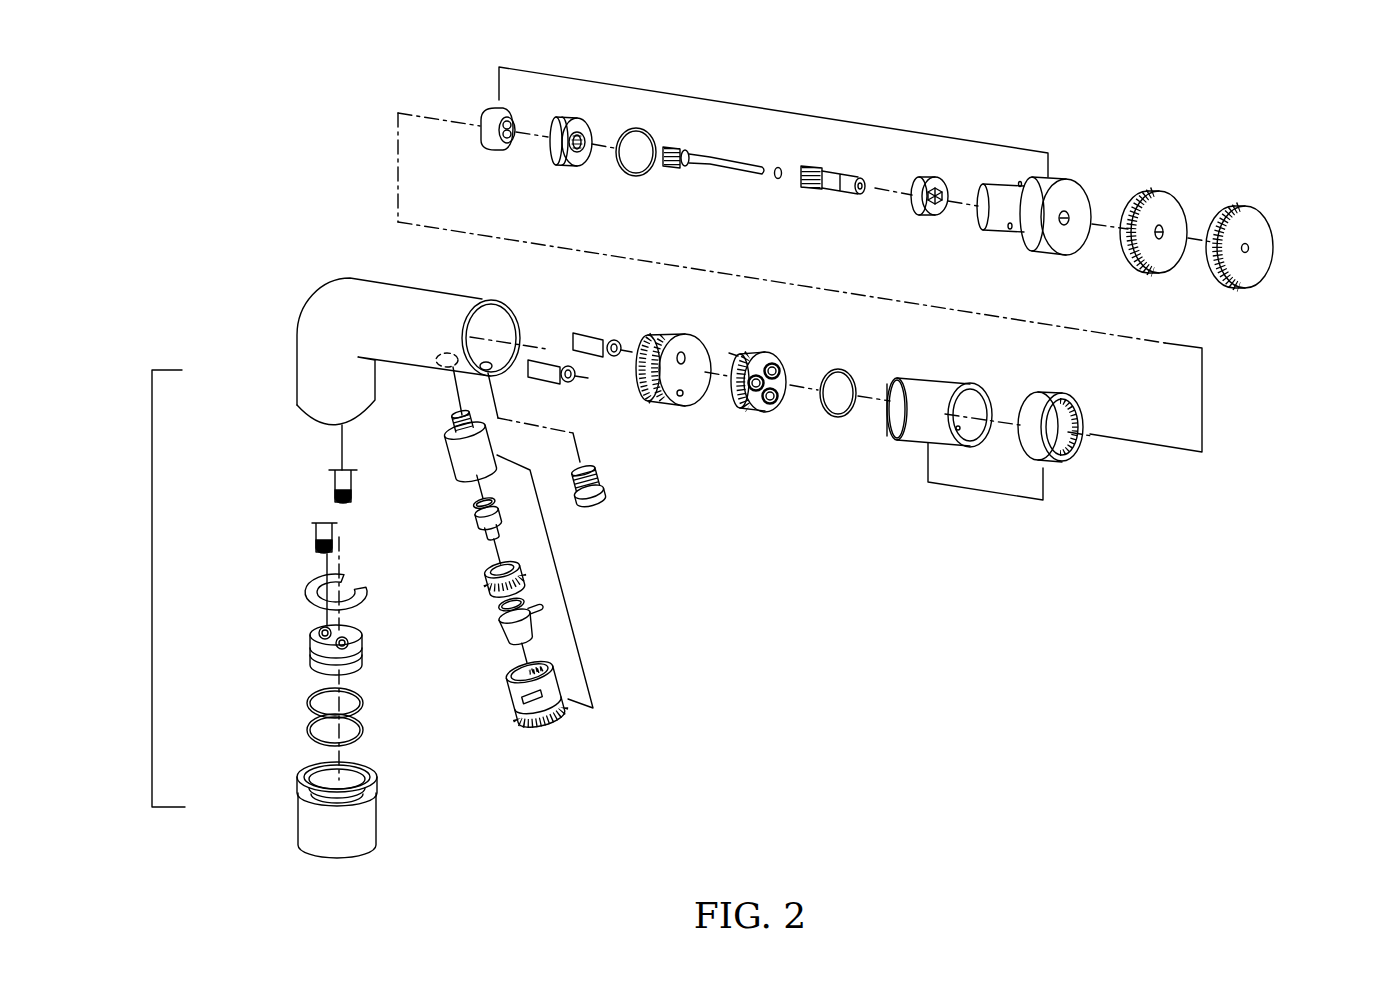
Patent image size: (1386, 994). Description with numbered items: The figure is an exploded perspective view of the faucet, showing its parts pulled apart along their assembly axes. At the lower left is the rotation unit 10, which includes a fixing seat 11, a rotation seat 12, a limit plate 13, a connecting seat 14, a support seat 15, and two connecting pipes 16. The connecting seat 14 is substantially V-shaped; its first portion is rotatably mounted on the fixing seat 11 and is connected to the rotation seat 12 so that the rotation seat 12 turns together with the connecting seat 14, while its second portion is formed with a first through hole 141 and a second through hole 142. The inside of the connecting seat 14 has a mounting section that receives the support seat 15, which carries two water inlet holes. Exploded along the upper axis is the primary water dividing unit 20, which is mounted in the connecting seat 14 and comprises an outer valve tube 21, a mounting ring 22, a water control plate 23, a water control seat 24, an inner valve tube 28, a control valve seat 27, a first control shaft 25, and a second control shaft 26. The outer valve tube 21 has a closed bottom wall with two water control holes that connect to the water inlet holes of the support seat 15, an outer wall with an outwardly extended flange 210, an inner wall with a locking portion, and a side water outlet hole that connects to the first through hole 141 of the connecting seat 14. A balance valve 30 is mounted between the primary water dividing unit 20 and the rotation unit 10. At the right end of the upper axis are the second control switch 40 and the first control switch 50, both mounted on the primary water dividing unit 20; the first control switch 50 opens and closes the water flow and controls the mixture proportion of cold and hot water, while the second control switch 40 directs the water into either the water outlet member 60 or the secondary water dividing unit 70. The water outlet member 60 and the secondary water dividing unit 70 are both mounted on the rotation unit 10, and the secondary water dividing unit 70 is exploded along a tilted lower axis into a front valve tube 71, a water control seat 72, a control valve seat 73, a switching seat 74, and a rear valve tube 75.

The rotation unit 10 is at (152, 583).
The fixing seat 11 is at (293, 810).
The rotation seat 12 is at (308, 650).
The limit plate 13 is at (305, 580).
The connecting seat 14 is at (297, 363).
The first through hole 141 is at (420, 372).
The second through hole 142 is at (503, 375).
The support seat 15 is at (668, 332).
The connecting pipes 16 is at (586, 335).
The primary water dividing unit 20 is at (882, 127).
The outer valve tube 21 is at (945, 378).
The outwardly extended flange 210 is at (887, 418).
The mounting ring 22 is at (1055, 393).
The water control plate 23 is at (493, 150).
The water control seat 24 is at (567, 167).
The first control shaft 25 is at (713, 172).
The second control shaft 26 is at (828, 197).
The control valve seat 27 is at (927, 217).
The inner valve tube 28 is at (1025, 250).
The balance valve 30 is at (767, 416).
The second control switch 40 is at (1167, 183).
The first control switch 50 is at (1268, 206).
The water outlet member 60 is at (615, 501).
The secondary water dividing unit 70 is at (563, 596).
The front valve tube 71 is at (440, 458).
The water control seat 72 is at (473, 530).
The control valve seat 73 is at (487, 587).
The switching seat 74 is at (498, 633).
The rear valve tube 75 is at (542, 723).